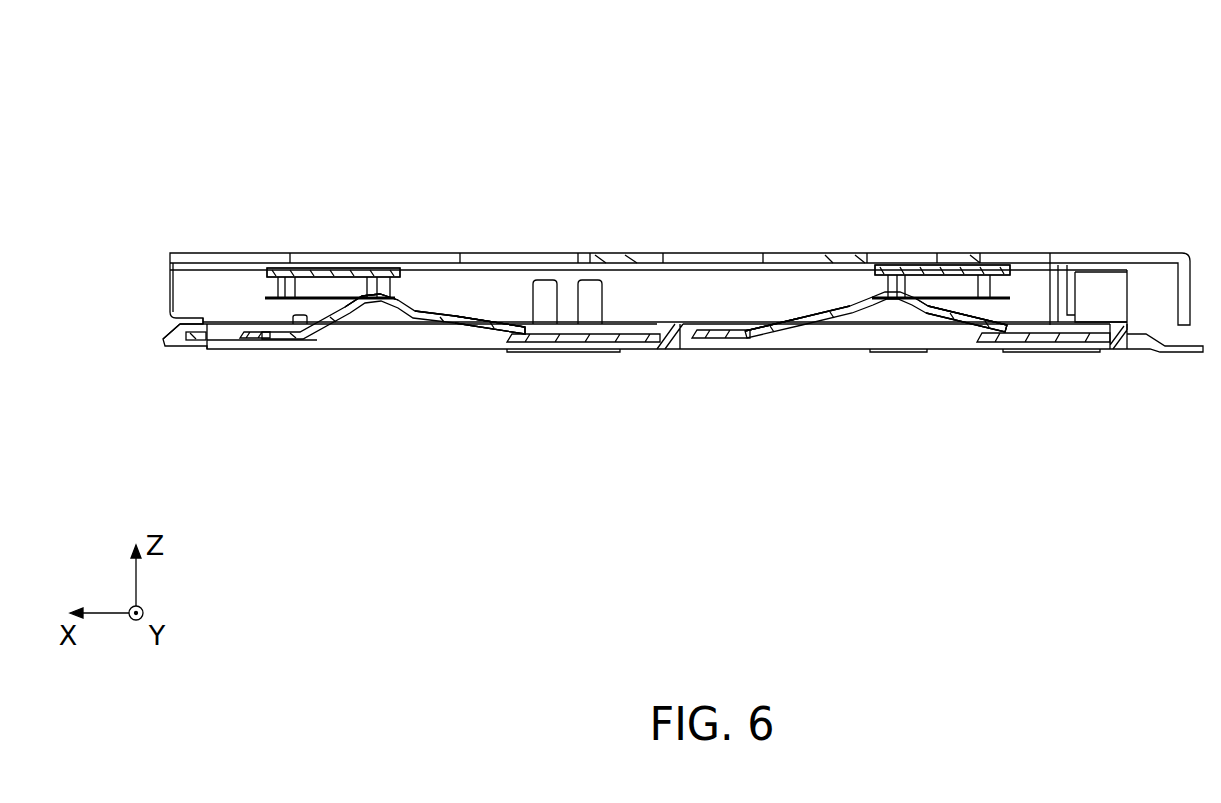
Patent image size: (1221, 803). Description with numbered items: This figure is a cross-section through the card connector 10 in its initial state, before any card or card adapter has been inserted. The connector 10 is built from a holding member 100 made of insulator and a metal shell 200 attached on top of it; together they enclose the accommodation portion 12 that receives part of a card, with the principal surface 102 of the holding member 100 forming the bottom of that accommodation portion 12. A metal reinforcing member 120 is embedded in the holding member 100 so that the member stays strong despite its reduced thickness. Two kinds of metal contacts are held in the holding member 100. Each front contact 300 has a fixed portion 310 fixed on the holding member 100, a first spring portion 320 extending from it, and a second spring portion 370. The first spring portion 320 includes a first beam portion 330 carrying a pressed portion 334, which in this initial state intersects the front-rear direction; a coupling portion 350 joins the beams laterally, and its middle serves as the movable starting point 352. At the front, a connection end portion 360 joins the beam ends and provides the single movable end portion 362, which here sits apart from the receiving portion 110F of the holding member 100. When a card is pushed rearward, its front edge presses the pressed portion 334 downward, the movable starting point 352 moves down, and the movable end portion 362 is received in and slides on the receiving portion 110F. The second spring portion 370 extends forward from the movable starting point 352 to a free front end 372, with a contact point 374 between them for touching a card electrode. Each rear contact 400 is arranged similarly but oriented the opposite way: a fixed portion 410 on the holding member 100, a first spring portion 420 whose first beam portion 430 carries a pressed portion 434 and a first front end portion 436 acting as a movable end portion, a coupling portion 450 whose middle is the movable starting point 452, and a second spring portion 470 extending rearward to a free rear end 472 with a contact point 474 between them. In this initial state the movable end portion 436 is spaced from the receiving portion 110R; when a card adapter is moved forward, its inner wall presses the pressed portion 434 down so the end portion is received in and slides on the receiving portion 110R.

The connector 10 is at (797, 105).
The accommodation portion 12 is at (637, 311).
The holding member 100 is at (170, 346).
The principal surface 102 is at (258, 335).
The receiving portion 110F is at (233, 340).
The receiving portion 110R is at (698, 340).
The reinforcing member 120 is at (196, 337).
The shell 200 is at (625, 258).
The front contact 300 is at (447, 293).
The fixed portion 310 is at (608, 337).
The first spring portion 320 is at (503, 322).
The first beam portion 330 is at (490, 325).
The pressed portion 334 is at (335, 312).
The coupling portion 350 is at (452, 323).
The movable starting point 352 is at (470, 319).
The connection end portion 360 is at (250, 330).
The movable end portion 362 is at (333, 272).
The second spring portion 370 is at (362, 298).
The front end 372 is at (347, 323).
The contact point 374 is at (380, 297).
The rear contact 400 is at (795, 305).
The fixed portion 410 is at (1085, 342).
The first spring portion 420 is at (1010, 324).
The first beam portion 430 is at (966, 319).
The pressed portion 434 is at (962, 315).
The first front end portion 436 is at (717, 337).
The coupling portion 450 is at (820, 328).
The movable starting point 452 is at (797, 318).
The second spring portion 470 is at (902, 296).
The rear end 472 is at (930, 320).
The contact point 474 is at (942, 270).